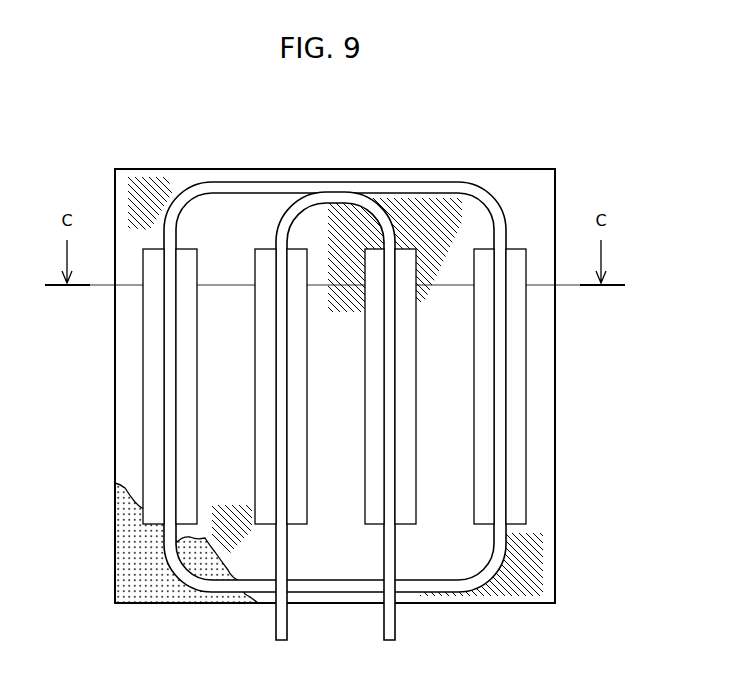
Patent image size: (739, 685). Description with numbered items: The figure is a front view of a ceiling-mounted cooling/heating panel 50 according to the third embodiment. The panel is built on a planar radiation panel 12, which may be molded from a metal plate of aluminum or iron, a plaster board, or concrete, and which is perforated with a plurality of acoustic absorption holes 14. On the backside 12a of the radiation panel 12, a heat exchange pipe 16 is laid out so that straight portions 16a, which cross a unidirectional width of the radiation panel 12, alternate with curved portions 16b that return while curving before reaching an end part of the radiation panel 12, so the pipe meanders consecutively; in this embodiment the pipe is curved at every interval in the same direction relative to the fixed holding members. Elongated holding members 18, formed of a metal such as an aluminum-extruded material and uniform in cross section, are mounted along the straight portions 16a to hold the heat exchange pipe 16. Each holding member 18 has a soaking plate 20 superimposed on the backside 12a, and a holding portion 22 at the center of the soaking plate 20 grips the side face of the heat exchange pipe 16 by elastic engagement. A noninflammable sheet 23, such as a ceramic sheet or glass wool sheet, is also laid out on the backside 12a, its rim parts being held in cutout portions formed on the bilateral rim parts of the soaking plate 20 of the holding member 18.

The radiation panel 12 is at (257, 200).
The backside of the radiation panel 12a is at (538, 424).
The acoustic absorption holes 14 is at (140, 563).
The heat exchange pipe 16 is at (415, 585).
The straight portions of the heat exchange pipe 16a is at (170, 452).
The curved portions of the heat exchange pipe 16b is at (205, 184).
The holding member 18 is at (130, 377).
The soaking plate 20 is at (517, 381).
The holding portion 22 is at (507, 460).
The noninflammable sheet 23 is at (515, 575).
The ceiling-mounted cooling/heating panel 50 is at (535, 148).